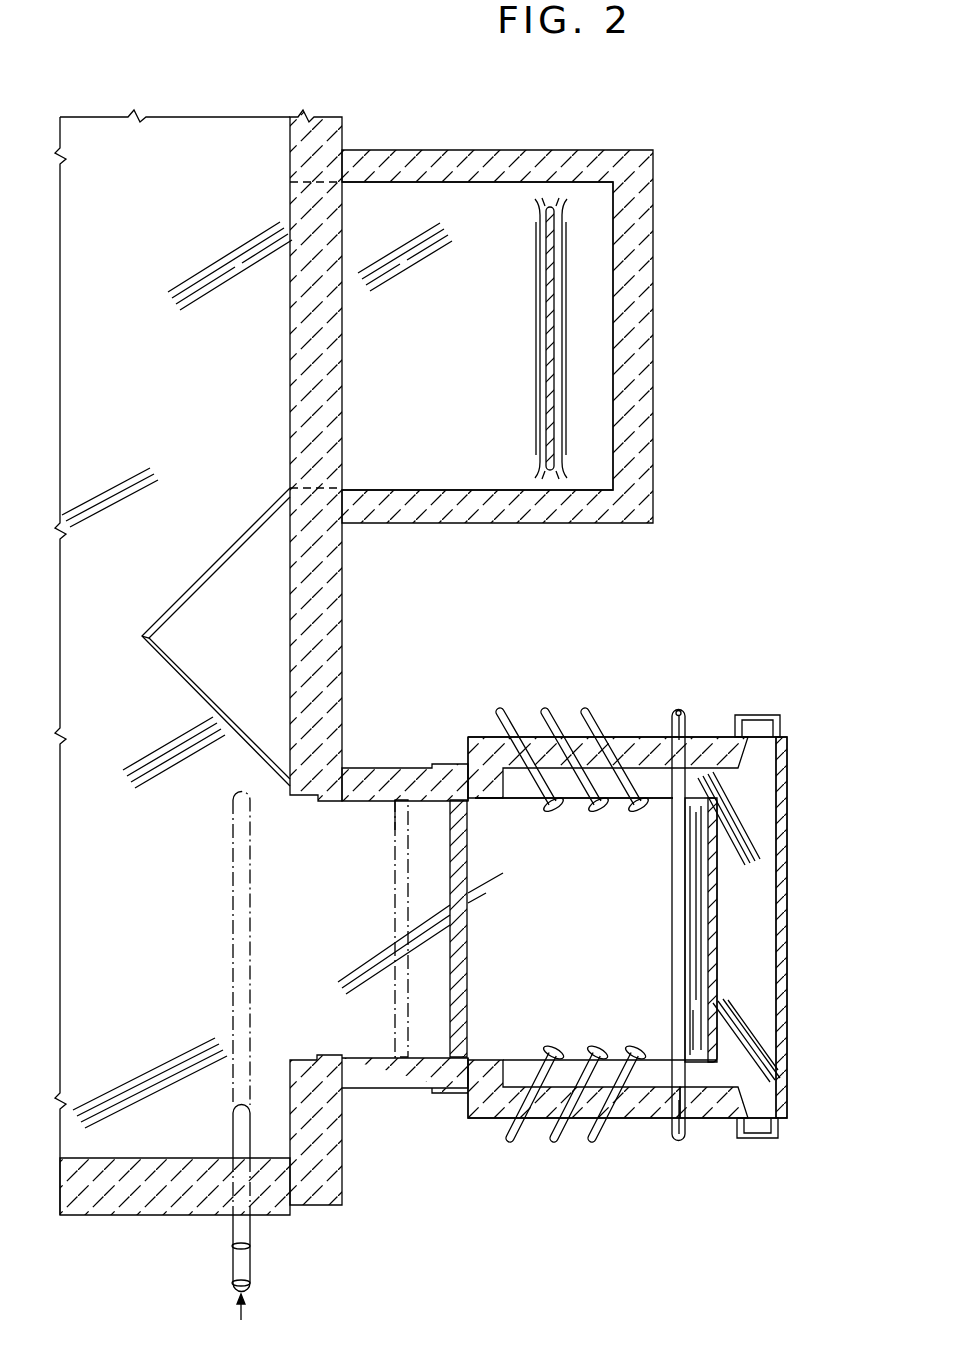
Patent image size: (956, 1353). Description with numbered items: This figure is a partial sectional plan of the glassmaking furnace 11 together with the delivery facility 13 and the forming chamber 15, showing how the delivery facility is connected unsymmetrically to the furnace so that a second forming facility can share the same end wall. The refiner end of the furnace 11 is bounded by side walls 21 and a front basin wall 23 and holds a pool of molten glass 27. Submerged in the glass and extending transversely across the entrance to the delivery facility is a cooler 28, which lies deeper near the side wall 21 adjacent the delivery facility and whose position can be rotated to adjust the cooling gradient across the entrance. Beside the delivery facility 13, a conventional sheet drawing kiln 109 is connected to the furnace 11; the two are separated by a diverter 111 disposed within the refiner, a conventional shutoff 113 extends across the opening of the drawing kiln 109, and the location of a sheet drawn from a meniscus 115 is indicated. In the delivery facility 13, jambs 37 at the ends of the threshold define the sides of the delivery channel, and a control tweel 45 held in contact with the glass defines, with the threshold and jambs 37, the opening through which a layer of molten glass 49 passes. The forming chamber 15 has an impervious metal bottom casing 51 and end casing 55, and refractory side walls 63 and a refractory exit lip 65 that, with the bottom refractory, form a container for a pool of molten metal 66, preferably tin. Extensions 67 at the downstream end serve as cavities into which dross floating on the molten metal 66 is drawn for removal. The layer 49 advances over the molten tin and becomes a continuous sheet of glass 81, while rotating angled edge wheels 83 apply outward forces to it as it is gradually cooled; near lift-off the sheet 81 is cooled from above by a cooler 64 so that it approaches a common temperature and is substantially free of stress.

The furnace 11 is at (199, 80).
The delivery facility 13 is at (407, 1110).
The forming chamber 15 is at (618, 700).
The side wall 21 is at (156, 1216).
The front basin wall 23 is at (342, 652).
The pool of molten glass 27 is at (162, 955).
The cooler 28 is at (233, 1130).
The jambs 37 is at (398, 768).
The control tweel 45 is at (467, 952).
The layer of molten glass 49 is at (442, 990).
The bottom casing 51 is at (635, 1122).
The end casing 55 is at (789, 860).
The refractory side walls 63 is at (700, 1102).
The cooler 64 is at (685, 714).
The refractory exit lip 65 is at (777, 976).
The pool of molten metal 66 is at (755, 940).
The extensions 67 is at (763, 715).
The continuous sheet of glass 81 is at (630, 940).
The angled edge wheels 83 is at (637, 812).
The sheet drawing kiln 109 is at (474, 118).
The diverter 111 is at (178, 672).
The shutoff 113 is at (342, 310).
The meniscus 115 is at (546, 330).